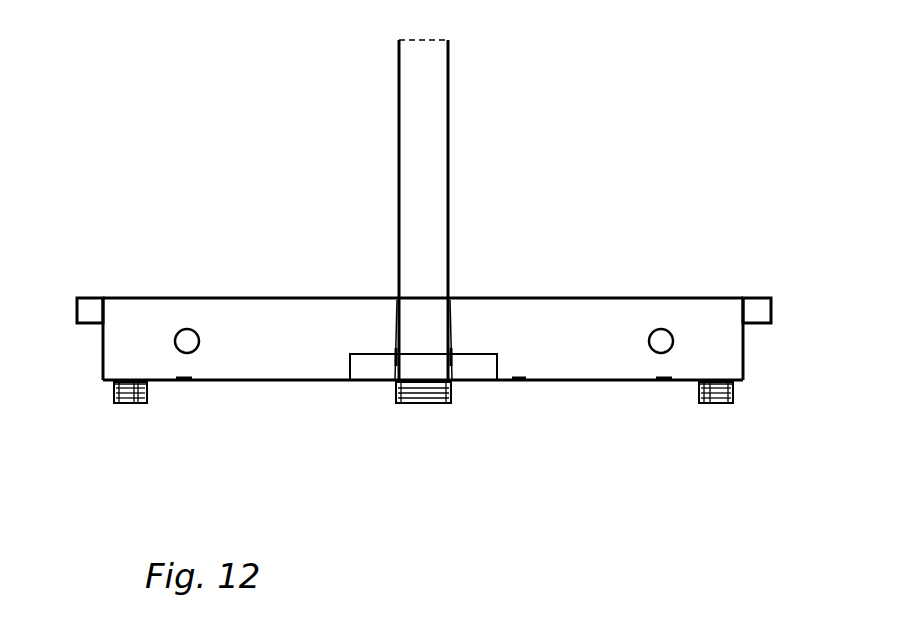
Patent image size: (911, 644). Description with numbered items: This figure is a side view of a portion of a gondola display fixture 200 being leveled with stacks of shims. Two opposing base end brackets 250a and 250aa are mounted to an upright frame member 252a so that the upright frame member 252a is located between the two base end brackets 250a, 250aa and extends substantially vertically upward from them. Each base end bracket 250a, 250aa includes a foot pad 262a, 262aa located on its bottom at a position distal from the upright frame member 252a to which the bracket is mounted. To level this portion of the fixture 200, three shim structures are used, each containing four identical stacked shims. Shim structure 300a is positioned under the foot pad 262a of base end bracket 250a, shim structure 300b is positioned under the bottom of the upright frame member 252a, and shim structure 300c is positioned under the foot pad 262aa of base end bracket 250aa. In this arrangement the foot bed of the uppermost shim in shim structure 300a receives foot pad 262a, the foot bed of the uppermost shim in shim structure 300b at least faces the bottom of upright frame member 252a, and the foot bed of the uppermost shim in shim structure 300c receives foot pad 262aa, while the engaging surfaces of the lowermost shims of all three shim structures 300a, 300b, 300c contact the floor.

The gondola display fixture 200 is at (624, 90).
The upright frame member 252a is at (417, 133).
The base end bracket 250aa is at (238, 340).
The base end bracket 250a is at (534, 317).
The foot pad 262aa is at (133, 380).
The foot pad 262a is at (720, 380).
The shim structure 300c is at (148, 427).
The shim structure 300b is at (434, 420).
The shim structure 300a is at (727, 417).